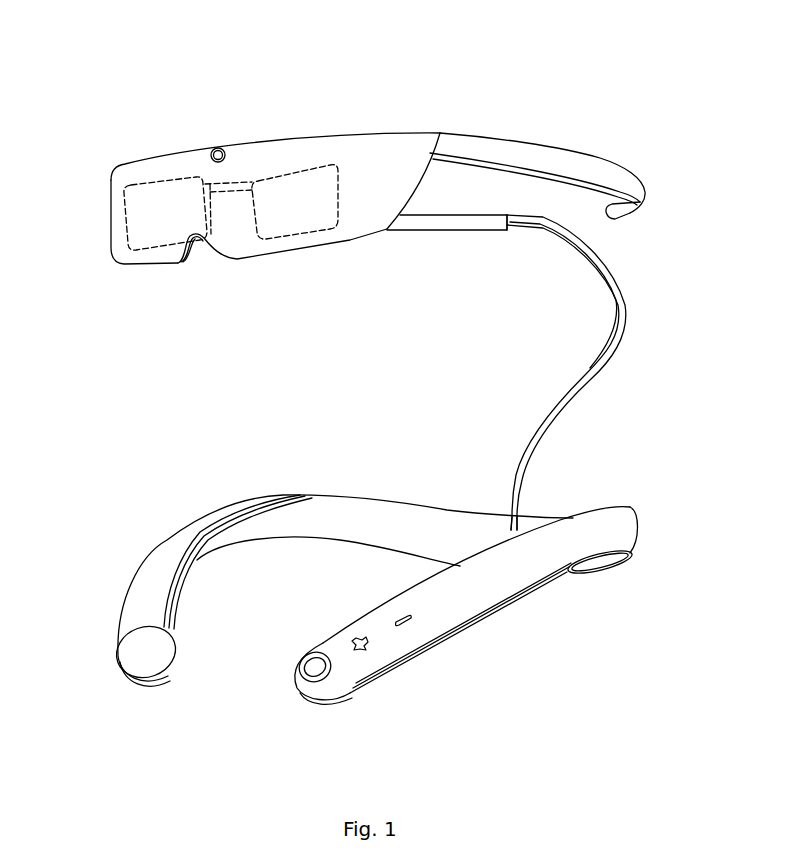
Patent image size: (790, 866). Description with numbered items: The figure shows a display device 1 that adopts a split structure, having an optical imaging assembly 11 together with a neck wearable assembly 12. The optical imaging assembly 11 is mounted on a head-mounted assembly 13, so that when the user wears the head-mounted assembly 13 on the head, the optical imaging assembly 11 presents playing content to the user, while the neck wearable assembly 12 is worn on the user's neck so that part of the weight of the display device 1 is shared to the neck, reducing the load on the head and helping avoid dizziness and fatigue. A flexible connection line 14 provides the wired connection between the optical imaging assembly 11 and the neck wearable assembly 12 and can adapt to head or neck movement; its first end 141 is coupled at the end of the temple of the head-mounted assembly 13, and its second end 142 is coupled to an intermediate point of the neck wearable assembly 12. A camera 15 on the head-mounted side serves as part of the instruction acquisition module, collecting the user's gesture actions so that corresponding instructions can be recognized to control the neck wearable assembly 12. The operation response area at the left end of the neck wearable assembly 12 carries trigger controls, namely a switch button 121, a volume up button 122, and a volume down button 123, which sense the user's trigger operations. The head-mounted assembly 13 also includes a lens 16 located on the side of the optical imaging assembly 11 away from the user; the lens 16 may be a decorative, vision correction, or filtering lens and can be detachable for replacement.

The display device 1 is at (525, 82).
The optical imaging assembly 11 is at (198, 247).
The neck wearable assembly 12 is at (163, 545).
The switch button 121 is at (315, 665).
The volume up button 122 is at (365, 650).
The volume down button 123 is at (408, 625).
The head-mounted assembly 13 is at (135, 158).
The connection line 14 is at (618, 336).
The first end 141 is at (523, 235).
The second end 142 is at (522, 512).
The camera 15 is at (221, 148).
The lens 16 is at (355, 228).